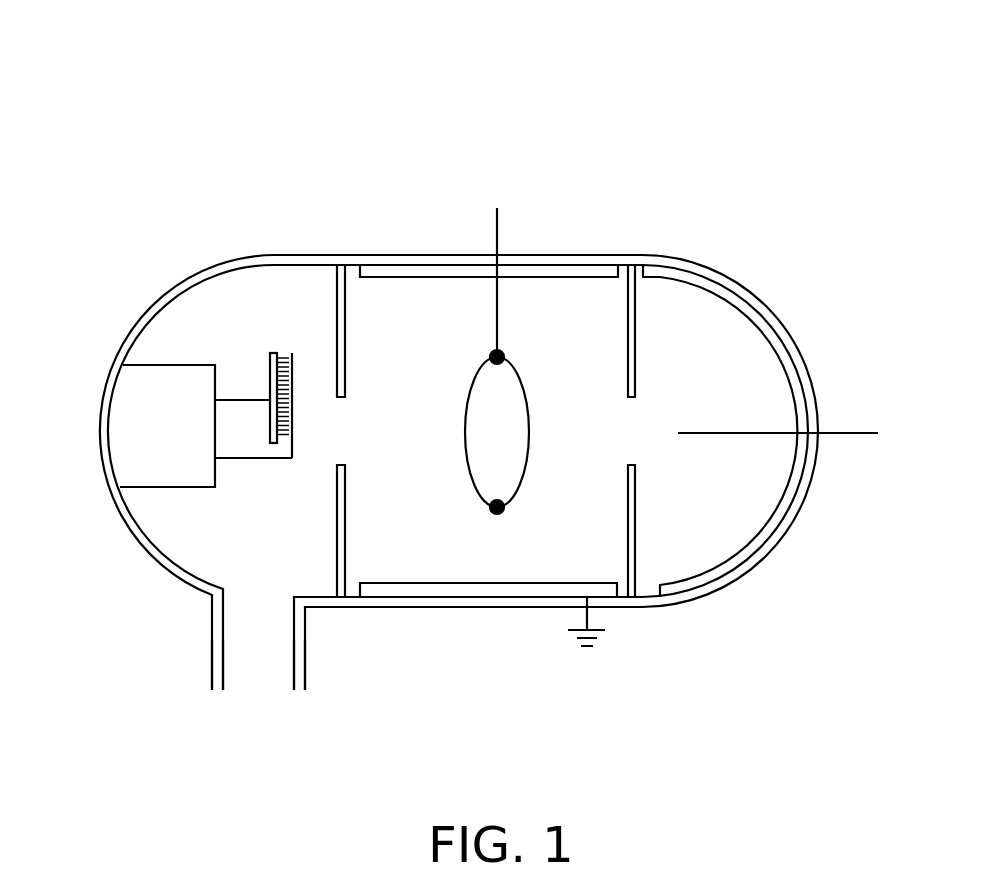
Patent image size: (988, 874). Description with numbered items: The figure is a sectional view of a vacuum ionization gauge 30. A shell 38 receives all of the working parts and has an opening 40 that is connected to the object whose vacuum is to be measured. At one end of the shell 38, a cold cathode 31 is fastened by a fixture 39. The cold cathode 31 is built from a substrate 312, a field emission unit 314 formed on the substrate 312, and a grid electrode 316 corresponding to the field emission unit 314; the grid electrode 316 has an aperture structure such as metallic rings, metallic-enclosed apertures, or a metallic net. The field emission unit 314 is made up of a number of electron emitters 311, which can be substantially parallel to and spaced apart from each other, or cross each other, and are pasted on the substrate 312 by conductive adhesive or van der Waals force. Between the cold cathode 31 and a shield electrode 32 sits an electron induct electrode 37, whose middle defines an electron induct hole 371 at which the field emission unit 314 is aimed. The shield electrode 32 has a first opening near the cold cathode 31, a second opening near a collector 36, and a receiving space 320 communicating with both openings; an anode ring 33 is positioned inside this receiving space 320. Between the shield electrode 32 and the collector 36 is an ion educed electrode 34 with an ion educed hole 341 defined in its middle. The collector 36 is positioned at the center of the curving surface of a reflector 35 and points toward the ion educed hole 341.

The vacuum ionization gauge 30 is at (518, 88).
The cold cathode 31 is at (152, 196).
The electron emitters 311 is at (283, 440).
The substrate 312 is at (273, 353).
The field emission unit 314 is at (286, 355).
The grid electrode 316 is at (292, 372).
The shield electrode 32 is at (447, 583).
The receiving space 320 is at (428, 493).
The anode ring 33 is at (504, 355).
The ion educed electrode 34 is at (630, 495).
The ion educed hole 341 is at (638, 425).
The reflector 35 is at (733, 552).
The collector 36 is at (732, 433).
The electron induct electrode 37 is at (324, 541).
The electron induct hole 371 is at (355, 425).
The shell 38 is at (177, 298).
The fixture 39 is at (177, 408).
The opening 40 is at (260, 683).